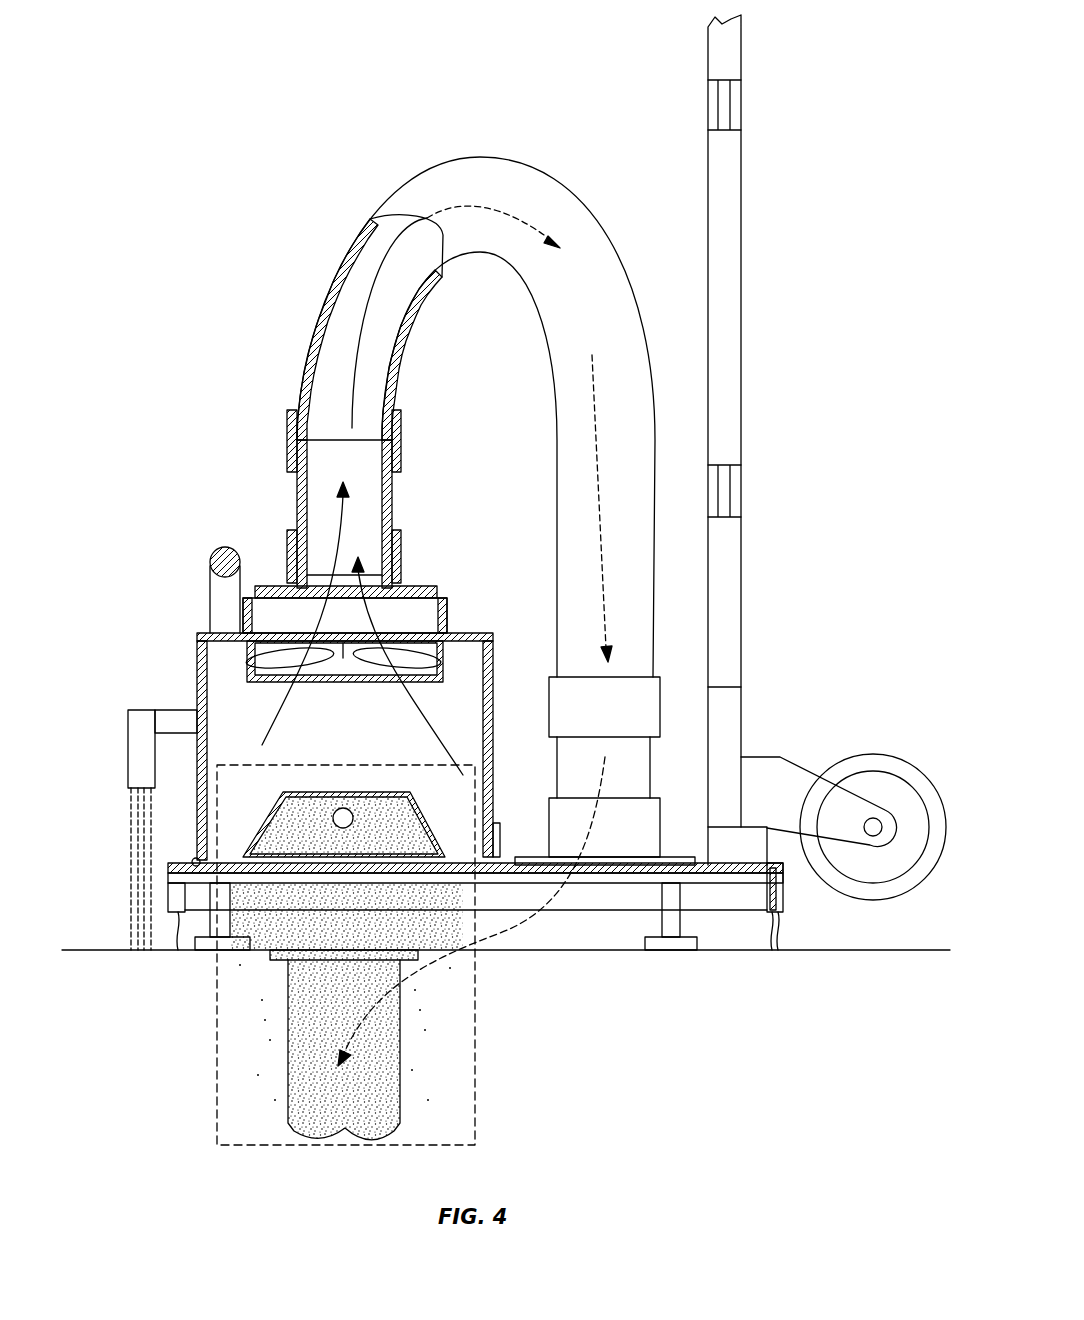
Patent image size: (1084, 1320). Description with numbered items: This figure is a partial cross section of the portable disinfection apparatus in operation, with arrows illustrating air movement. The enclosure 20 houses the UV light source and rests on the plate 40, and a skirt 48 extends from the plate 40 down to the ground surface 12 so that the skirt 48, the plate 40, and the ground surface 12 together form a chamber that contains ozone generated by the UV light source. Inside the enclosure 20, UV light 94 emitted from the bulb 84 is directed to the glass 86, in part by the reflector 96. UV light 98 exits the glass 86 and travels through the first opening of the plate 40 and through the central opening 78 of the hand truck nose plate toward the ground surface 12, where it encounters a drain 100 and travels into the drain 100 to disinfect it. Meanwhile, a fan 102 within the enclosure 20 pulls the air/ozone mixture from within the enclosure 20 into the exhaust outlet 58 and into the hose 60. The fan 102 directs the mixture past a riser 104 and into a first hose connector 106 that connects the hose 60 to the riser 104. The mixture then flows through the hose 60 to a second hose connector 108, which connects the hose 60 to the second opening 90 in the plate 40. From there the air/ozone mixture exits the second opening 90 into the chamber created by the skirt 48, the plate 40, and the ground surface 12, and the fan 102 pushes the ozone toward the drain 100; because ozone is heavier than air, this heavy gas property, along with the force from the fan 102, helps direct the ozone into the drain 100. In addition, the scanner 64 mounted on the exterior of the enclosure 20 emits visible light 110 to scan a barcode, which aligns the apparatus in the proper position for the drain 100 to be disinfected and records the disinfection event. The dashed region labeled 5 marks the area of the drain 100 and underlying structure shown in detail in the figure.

The hose 60 is at (497, 185).
The first hose connector 106 is at (397, 533).
The exhaust outlet 58 is at (424, 556).
The riser 104 is at (442, 597).
The fan 102 is at (403, 662).
The enclosure 20 is at (490, 668).
The reflector 96 is at (288, 790).
The glass 86 is at (427, 853).
The UV light 94 is at (407, 836).
The bulb 84 is at (347, 808).
The central opening 78 is at (500, 900).
The second opening 90 is at (615, 905).
The UV light 98 is at (393, 939).
The second hose connector 108 is at (653, 807).
The plate 40 is at (740, 865).
The skirt 48 is at (768, 933).
The ground surface 12 is at (888, 940).
The scanner 64 is at (138, 742).
The visible light 110 is at (140, 850).
The soil core region 5 is at (217, 1037).
The drain 100 is at (400, 1063).